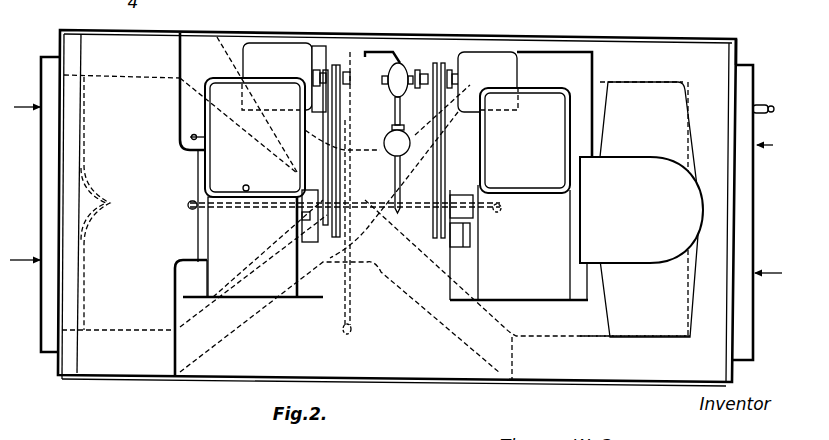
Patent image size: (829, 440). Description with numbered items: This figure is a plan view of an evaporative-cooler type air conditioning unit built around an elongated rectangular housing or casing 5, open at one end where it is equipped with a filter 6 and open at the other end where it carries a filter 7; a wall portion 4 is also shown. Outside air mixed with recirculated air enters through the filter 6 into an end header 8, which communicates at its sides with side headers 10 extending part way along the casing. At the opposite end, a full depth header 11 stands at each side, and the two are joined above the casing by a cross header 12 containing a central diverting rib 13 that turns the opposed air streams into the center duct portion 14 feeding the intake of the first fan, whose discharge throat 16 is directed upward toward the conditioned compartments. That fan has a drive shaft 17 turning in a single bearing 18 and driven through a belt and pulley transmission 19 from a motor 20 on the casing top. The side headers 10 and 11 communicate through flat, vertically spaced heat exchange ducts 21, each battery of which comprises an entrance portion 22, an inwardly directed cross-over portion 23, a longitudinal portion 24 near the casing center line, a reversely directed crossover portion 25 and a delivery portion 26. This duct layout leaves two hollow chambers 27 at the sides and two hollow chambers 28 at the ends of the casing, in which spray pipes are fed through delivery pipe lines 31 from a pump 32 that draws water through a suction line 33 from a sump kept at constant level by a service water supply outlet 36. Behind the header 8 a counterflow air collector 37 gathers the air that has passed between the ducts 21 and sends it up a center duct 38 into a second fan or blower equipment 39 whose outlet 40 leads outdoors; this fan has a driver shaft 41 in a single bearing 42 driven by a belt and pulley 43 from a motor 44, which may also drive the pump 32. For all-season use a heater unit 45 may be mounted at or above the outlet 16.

The casing wall 4 is at (79, 203).
The housing or casing 5 is at (450, 397).
The filter 6 is at (747, 92).
The filter 7 is at (52, 78).
The end header 8 is at (723, 66).
The side headers 10 is at (600, 75).
The full depth header 11 is at (146, 55).
The cross header 12 is at (121, 202).
The diverting rib 13 is at (100, 218).
The center duct portion 14 is at (193, 173).
The outlet or discharge throat 16 is at (245, 191).
The drive shaft 17 is at (297, 205).
The single bearing 18 is at (308, 225).
The belt and pulley transmission 19 is at (335, 125).
The motor 20 is at (283, 45).
The heat exchange ducts 21 is at (458, 342).
The entrance portion 22 is at (514, 355).
The cross-over portion 23 is at (438, 297).
The longitudinal portion 24 is at (360, 265).
The crossover portion 25 is at (236, 318).
The delivery portion 26 is at (195, 52).
The hollow chambers 27 is at (351, 50).
The hollow chambers 28 is at (165, 312).
The delivery pipe lines 31 is at (355, 240).
The pump 32 is at (400, 63).
The suction line 33 is at (366, 52).
The service water supply outlet 36 is at (772, 113).
The counterflow air collector 37 is at (673, 295).
The center duct 38 is at (641, 210).
The fan or blower equipment 39 is at (521, 176).
The outlet 40 is at (536, 178).
The driver shaft 41 is at (473, 218).
The single bearing 42 is at (458, 245).
The belt and pulley 43 is at (445, 145).
The motor 44 is at (490, 55).
The heater unit 45 is at (200, 113).